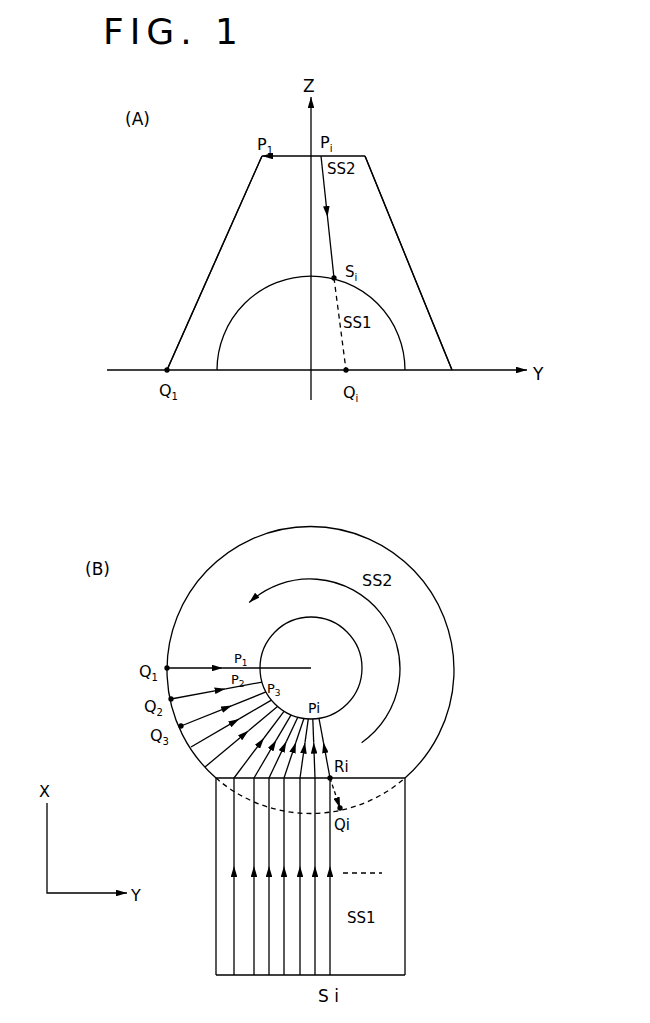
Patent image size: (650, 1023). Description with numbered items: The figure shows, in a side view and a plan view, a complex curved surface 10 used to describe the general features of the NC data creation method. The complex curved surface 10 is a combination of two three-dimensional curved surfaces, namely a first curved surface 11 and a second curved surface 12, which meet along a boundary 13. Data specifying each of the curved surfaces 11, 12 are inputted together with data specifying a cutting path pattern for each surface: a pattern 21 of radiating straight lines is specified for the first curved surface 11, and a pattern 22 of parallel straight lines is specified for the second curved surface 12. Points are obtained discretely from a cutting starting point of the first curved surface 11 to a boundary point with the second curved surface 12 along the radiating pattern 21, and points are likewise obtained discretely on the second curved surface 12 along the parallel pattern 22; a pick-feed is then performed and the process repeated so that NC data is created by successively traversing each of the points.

The complex curved surface 10 is at (381, 149).
The first curved surface 11 is at (367, 193).
The second curved surface 12 is at (393, 322).
The boundary between cylindrical part and block 13 is at (381, 776).
The pattern of radiating straight lines 21 is at (331, 240).
The pattern of parallel straight lines 22 is at (220, 942).